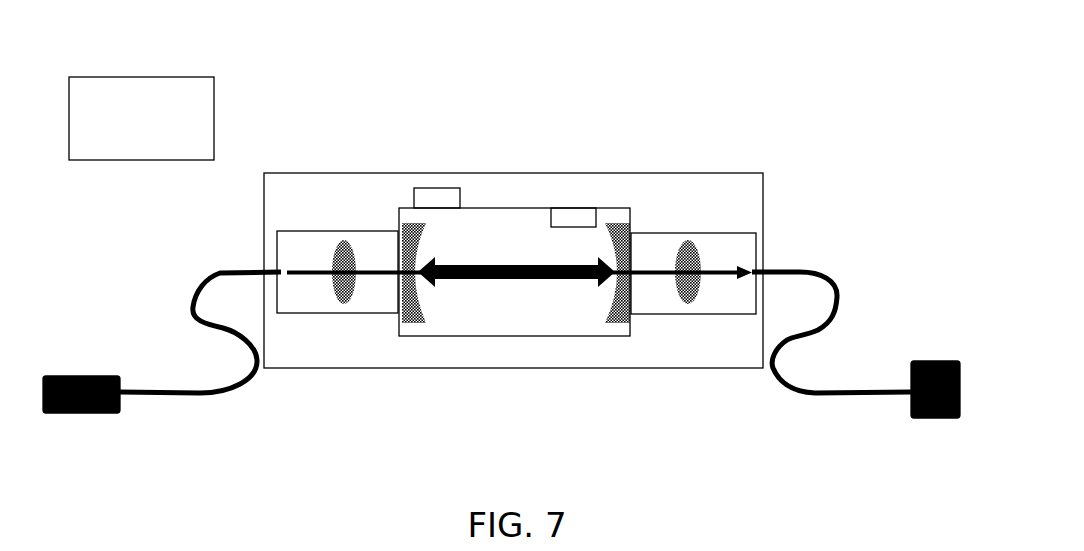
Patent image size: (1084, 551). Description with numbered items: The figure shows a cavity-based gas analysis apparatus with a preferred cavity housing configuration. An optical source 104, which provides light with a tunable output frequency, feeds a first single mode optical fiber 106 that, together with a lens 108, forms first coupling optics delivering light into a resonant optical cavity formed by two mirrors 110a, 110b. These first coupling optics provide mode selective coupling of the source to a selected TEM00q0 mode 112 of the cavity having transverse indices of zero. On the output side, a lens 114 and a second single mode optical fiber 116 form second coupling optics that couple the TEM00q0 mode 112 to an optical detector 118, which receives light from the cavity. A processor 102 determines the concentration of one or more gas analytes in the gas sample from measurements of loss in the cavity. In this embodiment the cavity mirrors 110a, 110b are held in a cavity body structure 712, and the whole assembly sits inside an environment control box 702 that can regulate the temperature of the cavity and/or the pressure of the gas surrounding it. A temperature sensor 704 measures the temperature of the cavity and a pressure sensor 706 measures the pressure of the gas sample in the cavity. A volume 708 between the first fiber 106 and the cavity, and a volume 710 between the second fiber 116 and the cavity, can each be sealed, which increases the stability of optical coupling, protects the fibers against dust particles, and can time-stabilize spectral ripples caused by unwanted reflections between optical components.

The processor 102 is at (157, 130).
The optical source 104 is at (92, 413).
The first single mode optical fiber 106 is at (218, 395).
The lens 108 is at (340, 243).
The mirror 110a is at (412, 318).
The mirror 110b is at (618, 320).
The TEM00q0 mode 112 is at (510, 281).
The lens 114 is at (688, 305).
The second single mode optical fiber 116 is at (815, 397).
The optical detector 118 is at (930, 418).
The environment control box 702 is at (707, 173).
The temperature sensor 704 is at (440, 189).
The pressure sensor 706 is at (575, 216).
The volume 708 is at (330, 313).
The volume 710 is at (730, 314).
The cavity body structure 712 is at (512, 207).